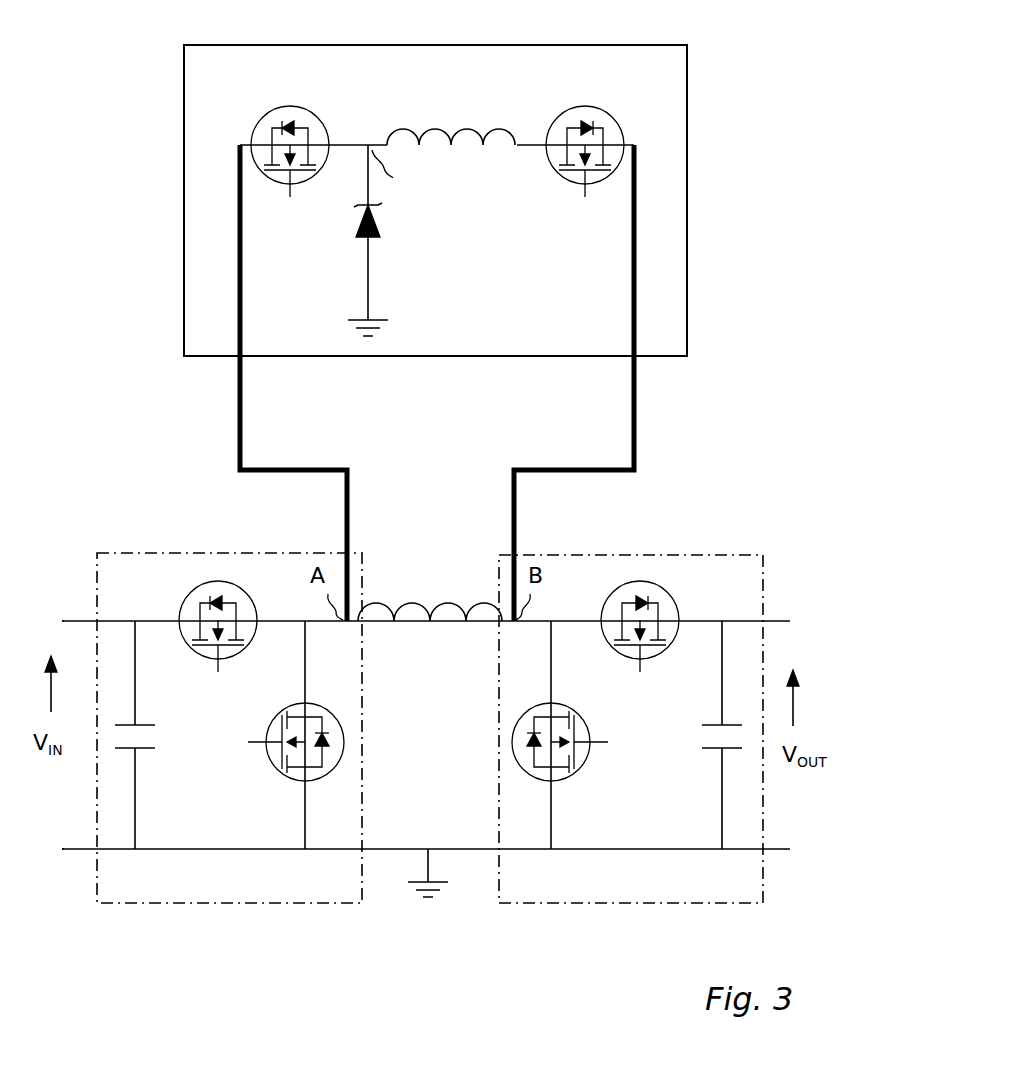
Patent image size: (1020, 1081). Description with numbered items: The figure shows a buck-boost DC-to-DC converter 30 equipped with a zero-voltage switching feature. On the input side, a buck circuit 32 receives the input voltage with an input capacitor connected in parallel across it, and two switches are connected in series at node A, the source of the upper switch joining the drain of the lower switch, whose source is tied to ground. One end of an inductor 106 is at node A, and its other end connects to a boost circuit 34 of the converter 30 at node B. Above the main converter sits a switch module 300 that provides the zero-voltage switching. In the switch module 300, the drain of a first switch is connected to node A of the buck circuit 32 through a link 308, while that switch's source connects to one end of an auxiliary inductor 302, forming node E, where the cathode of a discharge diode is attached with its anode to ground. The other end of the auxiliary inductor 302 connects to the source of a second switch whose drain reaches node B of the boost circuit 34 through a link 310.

The switch module 300 is at (184, 141).
The auxiliary inductor 302 is at (474, 140).
The link 308 is at (238, 402).
The link 310 is at (633, 406).
The inductor 106 is at (441, 624).
The buck-boost DC-to-DC converter 30 is at (262, 952).
The buck circuit 32 is at (98, 909).
The boost circuit 34 is at (500, 909).